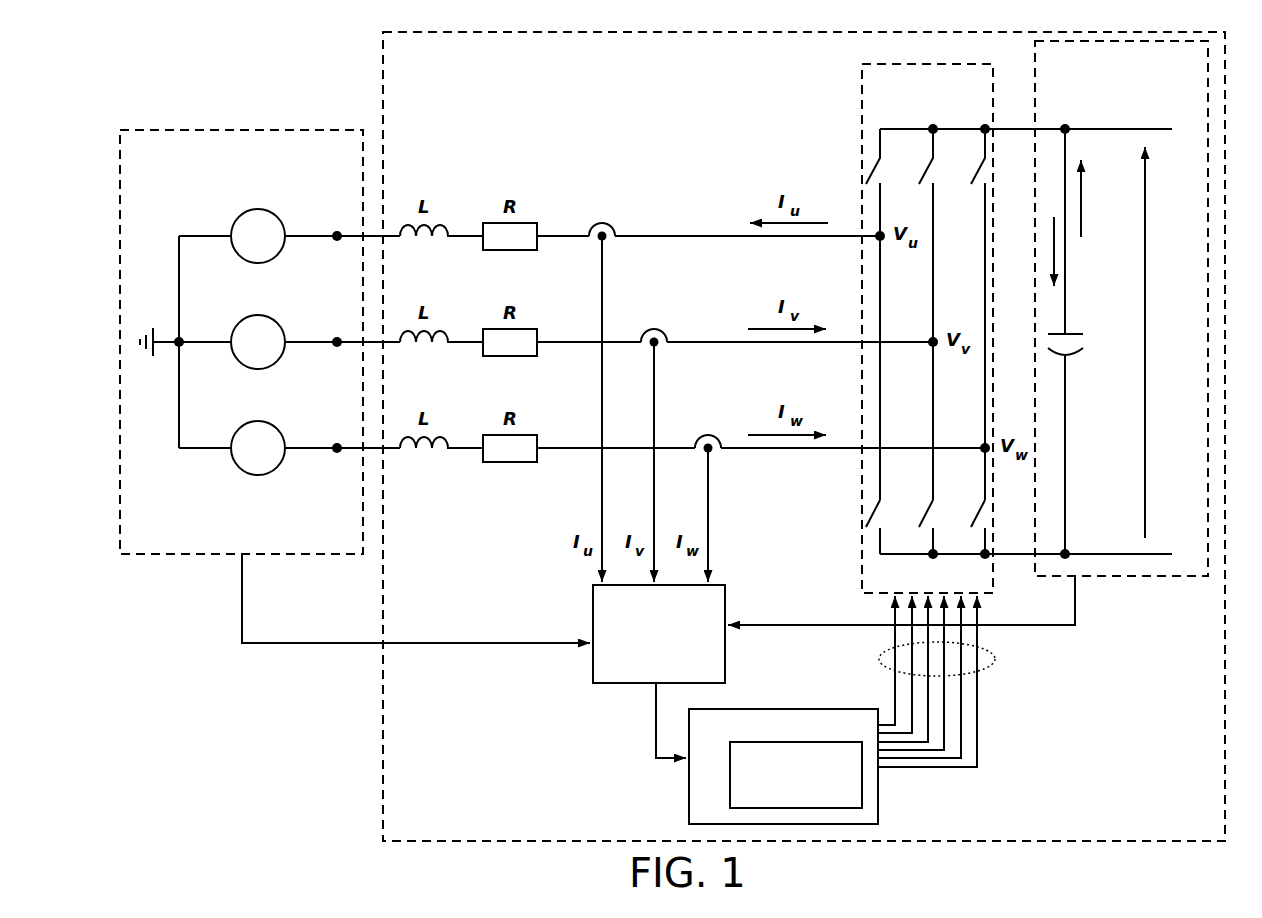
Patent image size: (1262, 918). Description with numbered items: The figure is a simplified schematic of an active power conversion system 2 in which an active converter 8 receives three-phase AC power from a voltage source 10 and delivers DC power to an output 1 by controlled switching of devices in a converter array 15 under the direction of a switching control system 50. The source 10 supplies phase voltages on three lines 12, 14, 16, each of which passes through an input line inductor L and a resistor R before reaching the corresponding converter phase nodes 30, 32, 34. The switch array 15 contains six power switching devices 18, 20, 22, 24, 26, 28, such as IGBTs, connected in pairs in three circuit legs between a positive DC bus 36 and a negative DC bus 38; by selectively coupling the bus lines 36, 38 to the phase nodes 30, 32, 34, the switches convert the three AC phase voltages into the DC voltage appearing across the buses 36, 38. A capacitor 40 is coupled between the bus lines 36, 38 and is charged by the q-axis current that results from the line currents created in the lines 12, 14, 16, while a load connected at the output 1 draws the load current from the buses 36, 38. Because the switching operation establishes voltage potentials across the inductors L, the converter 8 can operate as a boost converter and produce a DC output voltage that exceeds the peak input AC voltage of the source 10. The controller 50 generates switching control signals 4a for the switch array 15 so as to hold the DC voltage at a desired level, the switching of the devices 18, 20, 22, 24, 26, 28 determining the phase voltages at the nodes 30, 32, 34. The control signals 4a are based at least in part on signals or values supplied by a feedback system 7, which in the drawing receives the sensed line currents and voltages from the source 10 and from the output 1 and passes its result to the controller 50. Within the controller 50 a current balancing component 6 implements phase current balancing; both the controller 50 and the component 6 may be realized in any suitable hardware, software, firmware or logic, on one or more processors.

The output 1 is at (1208, 60).
The active power conversion system 2 is at (180, 60).
The switching control signals 4a is at (879, 659).
The current balancing component 6 is at (730, 777).
The feedback system 7 is at (593, 607).
The active converter 8 is at (383, 52).
The three phase AC power source 10 is at (120, 152).
The line 12 is at (572, 239).
The line 14 is at (572, 345).
The converter array 15 is at (862, 85).
The line 16 is at (572, 451).
The power switching device 18 is at (872, 158).
The power switching device 20 is at (872, 516).
The power switching device 22 is at (926, 160).
The power switching device 24 is at (926, 514).
The power switching device 26 is at (978, 160).
The power switching device 28 is at (978, 514).
The converter phase node 30 is at (879, 239).
The converter phase node 32 is at (932, 345).
The converter phase node 34 is at (984, 451).
The positive DC bus 36 is at (1150, 128).
The negative DC bus 38 is at (1136, 553).
The capacitor 40 is at (1080, 367).
The switching control system 50 is at (689, 790).